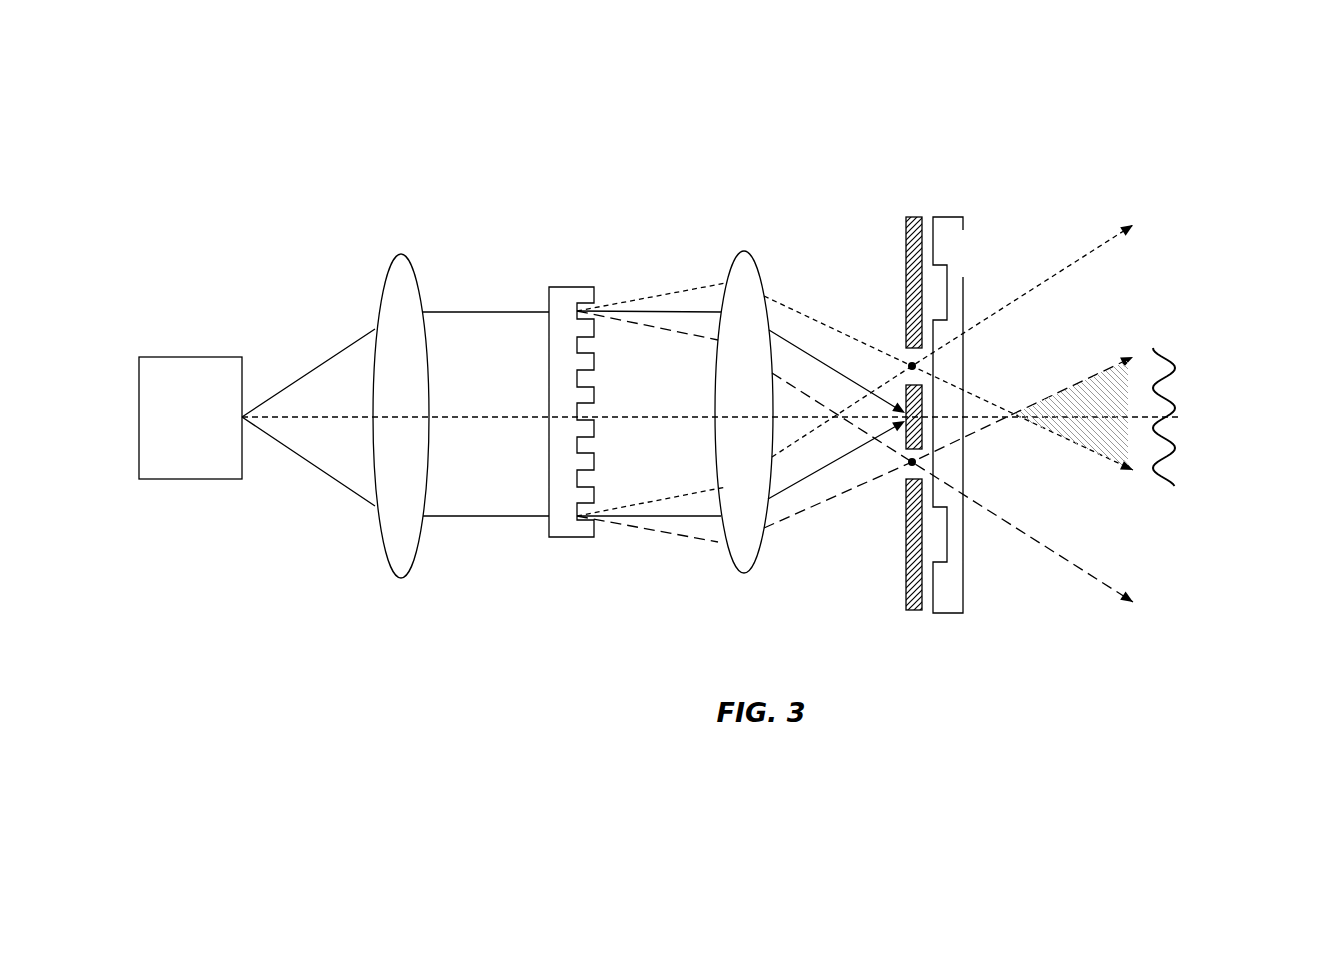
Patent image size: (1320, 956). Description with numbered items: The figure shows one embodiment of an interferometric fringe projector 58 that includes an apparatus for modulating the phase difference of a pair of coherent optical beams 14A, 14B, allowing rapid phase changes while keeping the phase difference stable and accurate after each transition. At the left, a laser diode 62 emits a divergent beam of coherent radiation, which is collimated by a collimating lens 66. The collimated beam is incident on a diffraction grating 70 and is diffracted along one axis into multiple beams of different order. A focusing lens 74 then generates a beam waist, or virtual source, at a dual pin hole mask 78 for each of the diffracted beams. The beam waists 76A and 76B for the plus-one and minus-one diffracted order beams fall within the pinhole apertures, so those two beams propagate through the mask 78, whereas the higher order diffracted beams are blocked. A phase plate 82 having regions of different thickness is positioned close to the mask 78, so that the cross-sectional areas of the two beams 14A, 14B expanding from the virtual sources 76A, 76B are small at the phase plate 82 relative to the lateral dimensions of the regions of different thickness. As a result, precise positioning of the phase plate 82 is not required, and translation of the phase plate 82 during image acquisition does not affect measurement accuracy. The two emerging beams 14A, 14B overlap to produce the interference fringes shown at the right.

The interferometric fringe projector 58 is at (868, 70).
The laser diode 62 is at (179, 463).
The collimating lens 66 is at (401, 580).
The diffraction grating 70 is at (565, 538).
The focusing lens 74 is at (745, 574).
The beam waist 76A is at (907, 363).
The beam waist 76B is at (908, 465).
The dual pin hole mask 78 is at (913, 611).
The phase plate 82 is at (947, 614).
The coherent optical beam 14A is at (1043, 308).
The coherent optical beam 14B is at (1043, 527).